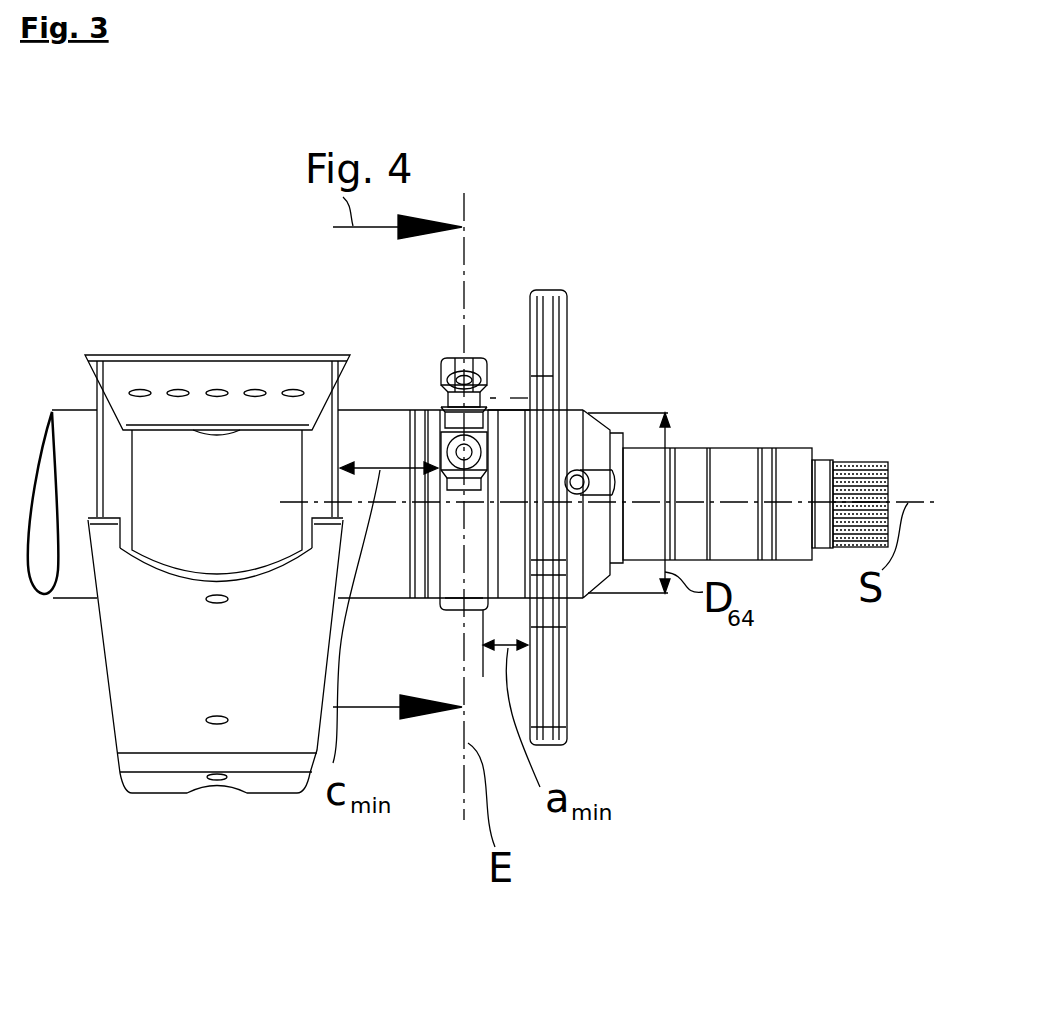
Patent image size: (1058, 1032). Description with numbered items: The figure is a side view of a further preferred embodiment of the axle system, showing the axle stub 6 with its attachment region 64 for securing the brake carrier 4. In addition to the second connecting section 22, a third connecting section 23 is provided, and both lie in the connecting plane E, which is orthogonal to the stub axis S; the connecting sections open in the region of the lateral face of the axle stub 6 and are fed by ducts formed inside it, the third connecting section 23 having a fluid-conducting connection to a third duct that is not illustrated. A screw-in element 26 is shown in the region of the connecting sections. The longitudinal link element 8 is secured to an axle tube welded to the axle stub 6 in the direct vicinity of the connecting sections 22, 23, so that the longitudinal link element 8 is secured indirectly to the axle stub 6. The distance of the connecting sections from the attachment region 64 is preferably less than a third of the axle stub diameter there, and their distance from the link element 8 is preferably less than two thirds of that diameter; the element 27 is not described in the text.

The brake carrier 4 is at (556, 364).
The axle stub 6 is at (795, 548).
The longitudinal link element 8 is at (170, 373).
The second connecting section 22 is at (498, 392).
The third connecting section 23 is at (518, 392).
The screw-in element 26 is at (455, 452).
The lower fastening nut 27 is at (442, 490).
The attachment region 64 is at (574, 568).